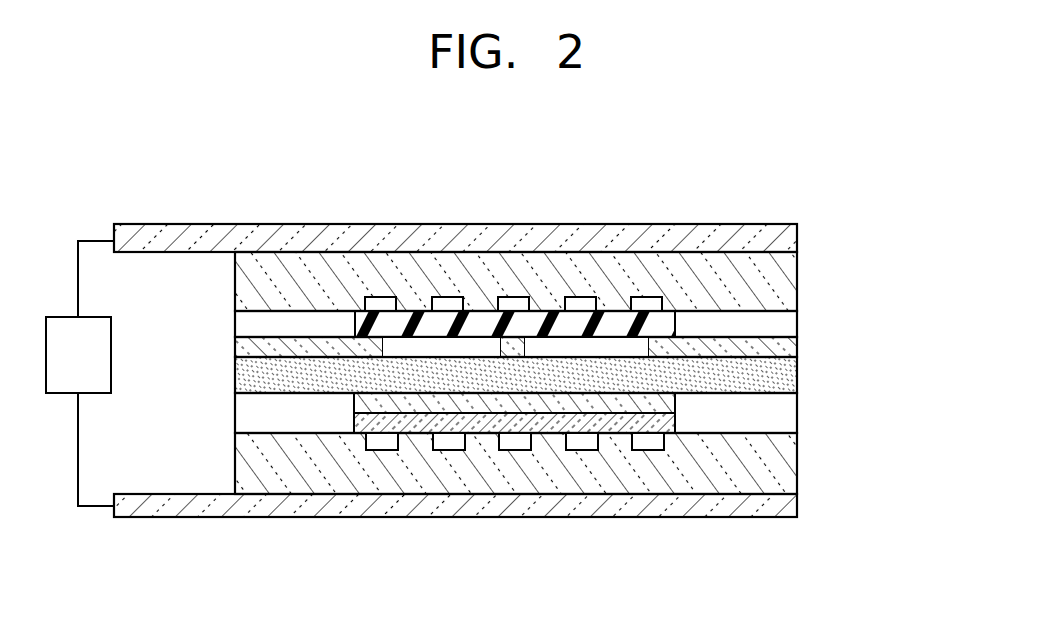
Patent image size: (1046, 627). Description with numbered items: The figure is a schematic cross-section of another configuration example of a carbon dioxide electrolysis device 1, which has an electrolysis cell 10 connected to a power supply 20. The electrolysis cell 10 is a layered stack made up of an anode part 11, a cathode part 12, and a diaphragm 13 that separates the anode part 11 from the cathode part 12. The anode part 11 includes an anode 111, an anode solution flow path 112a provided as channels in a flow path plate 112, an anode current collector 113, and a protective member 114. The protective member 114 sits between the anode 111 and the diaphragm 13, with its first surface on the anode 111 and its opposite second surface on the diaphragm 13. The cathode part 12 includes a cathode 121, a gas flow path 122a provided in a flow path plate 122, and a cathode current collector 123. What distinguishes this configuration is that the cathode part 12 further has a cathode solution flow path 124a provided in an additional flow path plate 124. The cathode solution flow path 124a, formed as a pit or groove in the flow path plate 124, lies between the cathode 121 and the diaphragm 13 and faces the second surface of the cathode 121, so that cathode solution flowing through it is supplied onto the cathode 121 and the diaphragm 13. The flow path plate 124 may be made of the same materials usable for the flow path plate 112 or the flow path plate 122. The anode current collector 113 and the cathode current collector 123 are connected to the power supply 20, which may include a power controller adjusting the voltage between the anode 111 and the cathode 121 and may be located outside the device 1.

The carbon dioxide electrolysis device 1 is at (155, 182).
The electrolysis cell 10 is at (538, 376).
The anode part 11 is at (512, 479).
The cathode part 12 is at (509, 275).
The diaphragm 13 is at (797, 376).
The power supply 20 is at (111, 353).
The anode 111 is at (665, 427).
The flow path plate 112 is at (787, 461).
The anode solution flow path 112a is at (655, 442).
The anode current collector 113 is at (484, 506).
The protective member 114 is at (665, 404).
The cathode 121 is at (667, 323).
The flow path plate 122 is at (785, 285).
The gas flow path 122a is at (448, 298).
The cathode current collector 123 is at (783, 235).
The flow path plate 124 is at (763, 346).
The cathode solution flow path 124a is at (612, 345).